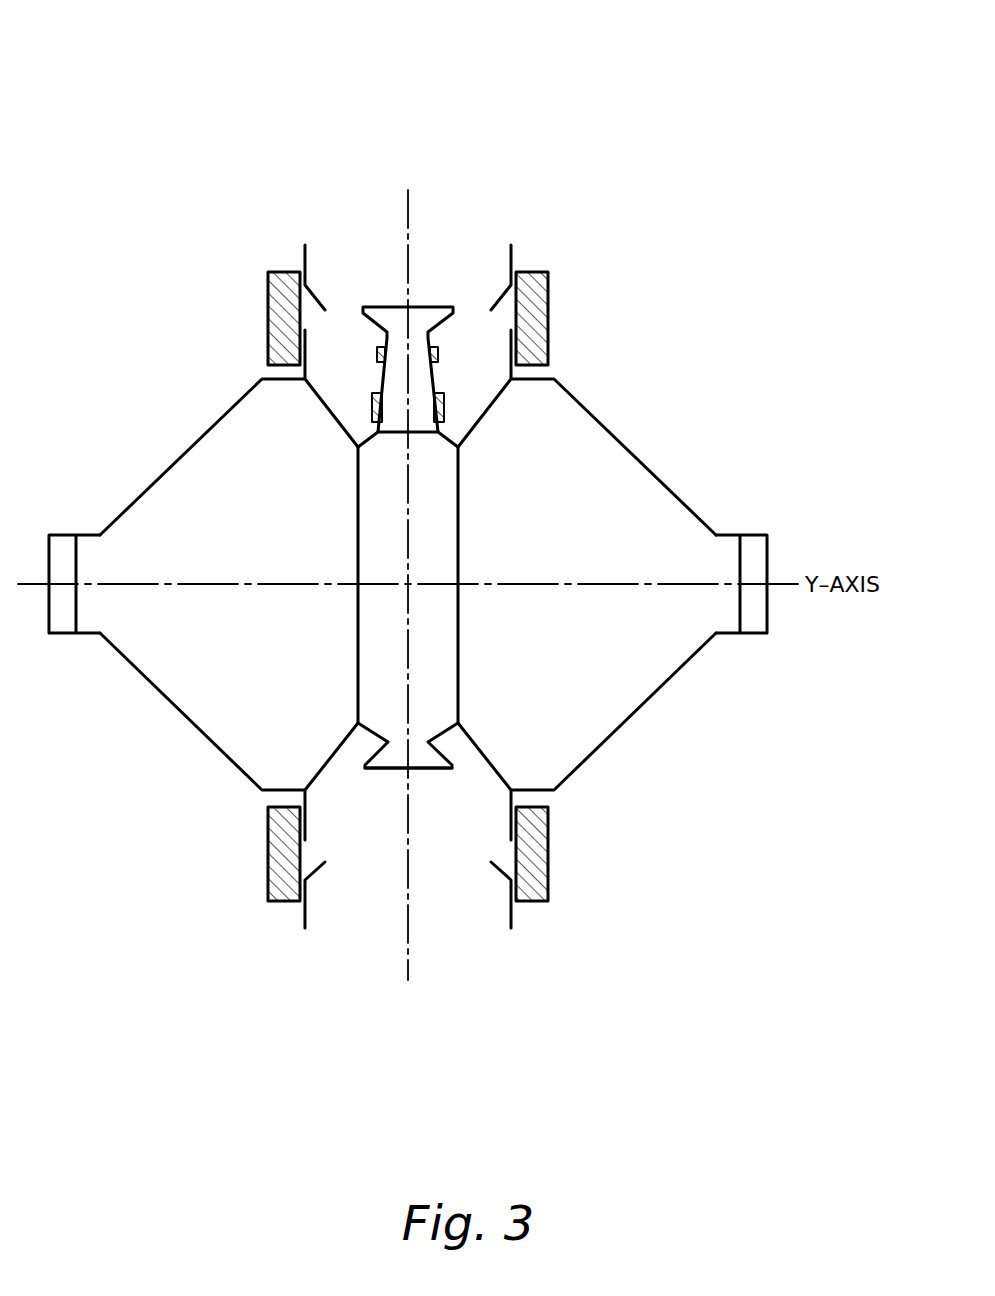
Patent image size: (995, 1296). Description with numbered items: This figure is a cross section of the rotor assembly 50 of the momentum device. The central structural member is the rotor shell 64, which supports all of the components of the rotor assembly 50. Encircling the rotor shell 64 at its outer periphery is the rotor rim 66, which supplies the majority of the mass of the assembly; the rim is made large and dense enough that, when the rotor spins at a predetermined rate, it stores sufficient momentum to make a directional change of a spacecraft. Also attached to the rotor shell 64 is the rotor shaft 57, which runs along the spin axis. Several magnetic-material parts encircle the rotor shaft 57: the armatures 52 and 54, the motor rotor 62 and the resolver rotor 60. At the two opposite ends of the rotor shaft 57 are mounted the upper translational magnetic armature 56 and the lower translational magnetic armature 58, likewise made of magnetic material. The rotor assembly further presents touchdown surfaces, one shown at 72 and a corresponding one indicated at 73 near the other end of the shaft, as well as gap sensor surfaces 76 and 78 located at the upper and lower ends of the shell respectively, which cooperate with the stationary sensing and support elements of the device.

The rotor assembly 50 is at (765, 980).
The armature 52 is at (549, 838).
The armature 54 is at (268, 293).
The upper translational magnetic armature 56 is at (430, 305).
The rotor shaft 57 is at (358, 545).
The lower translational magnetic armature 58 is at (387, 772).
The resolver rotor 60 is at (377, 355).
The motor rotor 62 is at (372, 410).
The rotor shell 64 is at (643, 710).
The rotor rim 66 is at (757, 625).
The touchdown surface 72 is at (498, 873).
The upper inner gap 73 is at (503, 292).
The gap sensor surface 76 is at (305, 245).
The gap sensor surface 78 is at (305, 925).